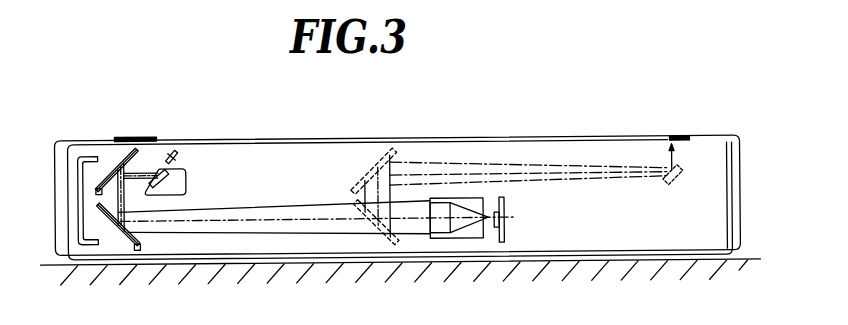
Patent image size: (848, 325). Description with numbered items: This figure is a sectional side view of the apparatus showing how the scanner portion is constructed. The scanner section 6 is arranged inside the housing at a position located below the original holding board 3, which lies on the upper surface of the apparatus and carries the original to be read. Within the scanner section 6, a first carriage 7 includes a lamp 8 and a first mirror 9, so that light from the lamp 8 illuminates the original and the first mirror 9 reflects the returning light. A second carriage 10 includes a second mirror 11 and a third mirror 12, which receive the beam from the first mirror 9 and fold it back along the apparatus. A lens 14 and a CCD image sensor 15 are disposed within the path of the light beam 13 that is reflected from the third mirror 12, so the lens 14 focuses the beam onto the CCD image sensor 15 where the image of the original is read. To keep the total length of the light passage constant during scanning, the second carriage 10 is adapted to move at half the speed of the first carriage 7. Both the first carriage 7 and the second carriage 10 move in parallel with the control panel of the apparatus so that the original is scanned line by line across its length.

The original holding board 3 is at (541, 138).
The scanner section 6 is at (275, 163).
The first carriage 7 is at (188, 178).
The lamp 8 is at (180, 159).
The first mirror 9 is at (187, 189).
The second carriage 10 is at (90, 213).
The second mirror 11 is at (118, 167).
The third mirror 12 is at (123, 243).
The light beam 13 is at (298, 243).
The lens 14 is at (467, 239).
The CCD image sensor 15 is at (505, 223).